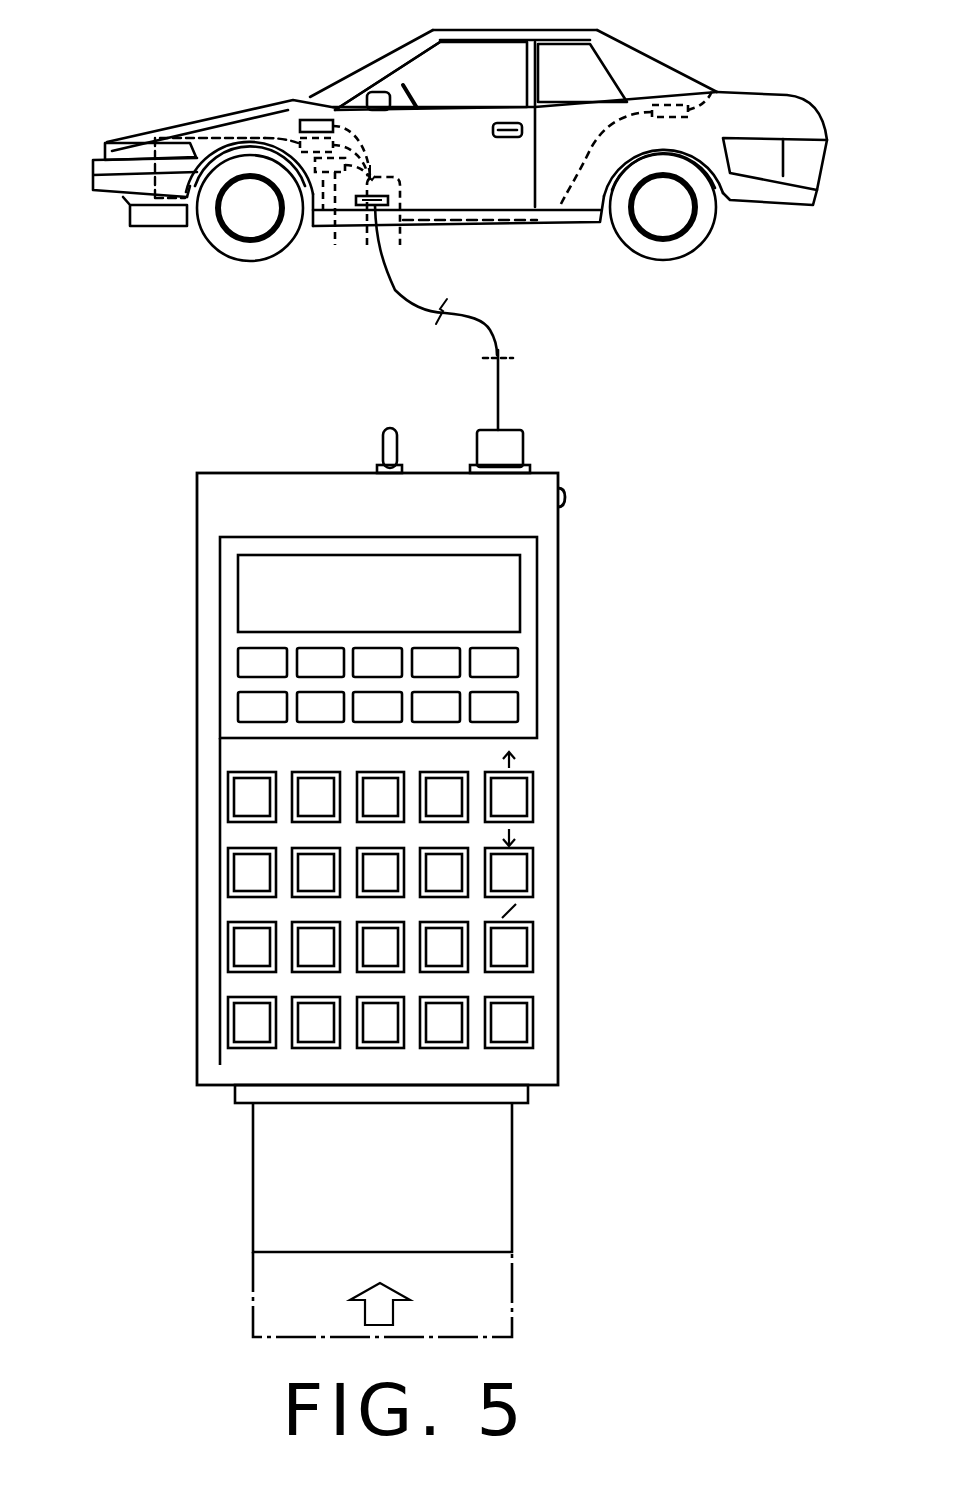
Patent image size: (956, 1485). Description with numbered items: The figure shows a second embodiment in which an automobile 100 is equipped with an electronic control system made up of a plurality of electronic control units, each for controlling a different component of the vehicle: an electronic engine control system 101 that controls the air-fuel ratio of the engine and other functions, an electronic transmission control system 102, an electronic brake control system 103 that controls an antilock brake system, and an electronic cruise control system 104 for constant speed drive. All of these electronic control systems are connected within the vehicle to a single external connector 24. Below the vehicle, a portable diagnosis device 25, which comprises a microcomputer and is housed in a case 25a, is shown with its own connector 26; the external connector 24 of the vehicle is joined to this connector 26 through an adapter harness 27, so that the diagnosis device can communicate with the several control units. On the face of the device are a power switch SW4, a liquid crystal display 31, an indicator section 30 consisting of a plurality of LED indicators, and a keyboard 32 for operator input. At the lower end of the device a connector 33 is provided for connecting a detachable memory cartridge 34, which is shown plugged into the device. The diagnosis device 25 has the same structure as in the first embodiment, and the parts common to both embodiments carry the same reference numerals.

The automobile 100 is at (654, 53).
The electronic engine control system 101 is at (310, 118).
The electronic transmission control system 102 is at (298, 142).
The electronic brake control system 103 is at (330, 176).
The electronic cruise control system 104 is at (727, 83).
The external connector 24 is at (387, 212).
The portable diagnosis device 25 is at (562, 577).
The case 25a is at (220, 762).
The connector 26 is at (498, 452).
The adapter harness 27 is at (500, 393).
The power switch SW4 is at (383, 447).
The indicator section 30 is at (578, 642).
The liquid crystal display 31 is at (237, 577).
The keyboard 32 is at (578, 770).
The connector 33 is at (513, 1091).
The memory cartridge 34 is at (250, 1213).